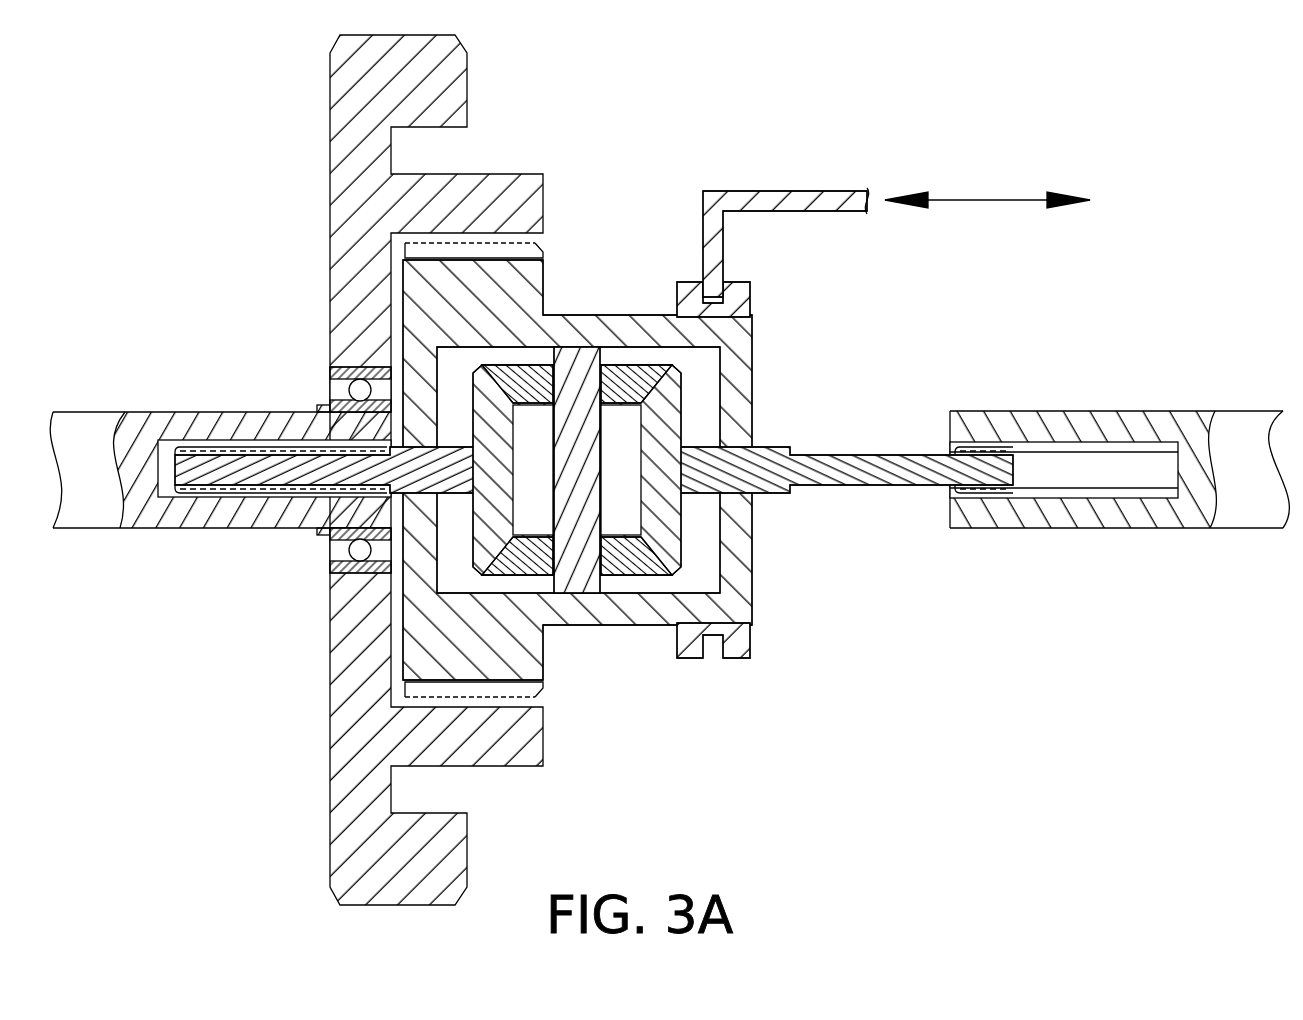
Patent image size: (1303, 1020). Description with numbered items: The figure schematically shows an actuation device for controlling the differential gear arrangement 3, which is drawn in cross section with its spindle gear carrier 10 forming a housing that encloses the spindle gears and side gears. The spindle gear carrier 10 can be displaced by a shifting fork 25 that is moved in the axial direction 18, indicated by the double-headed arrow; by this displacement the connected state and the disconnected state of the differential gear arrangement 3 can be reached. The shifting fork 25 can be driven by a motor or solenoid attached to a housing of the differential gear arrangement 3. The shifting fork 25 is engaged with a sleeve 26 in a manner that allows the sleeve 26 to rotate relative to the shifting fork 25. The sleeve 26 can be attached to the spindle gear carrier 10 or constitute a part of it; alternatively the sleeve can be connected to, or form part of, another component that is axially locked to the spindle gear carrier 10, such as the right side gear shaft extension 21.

The differential gear arrangement 3 is at (669, 460).
The spindle gear carrier 10 is at (753, 543).
The axial direction 18 is at (995, 200).
The right side gear shaft extension 21 is at (778, 447).
The shifting fork 25 is at (782, 191).
The sleeve 26 is at (752, 292).